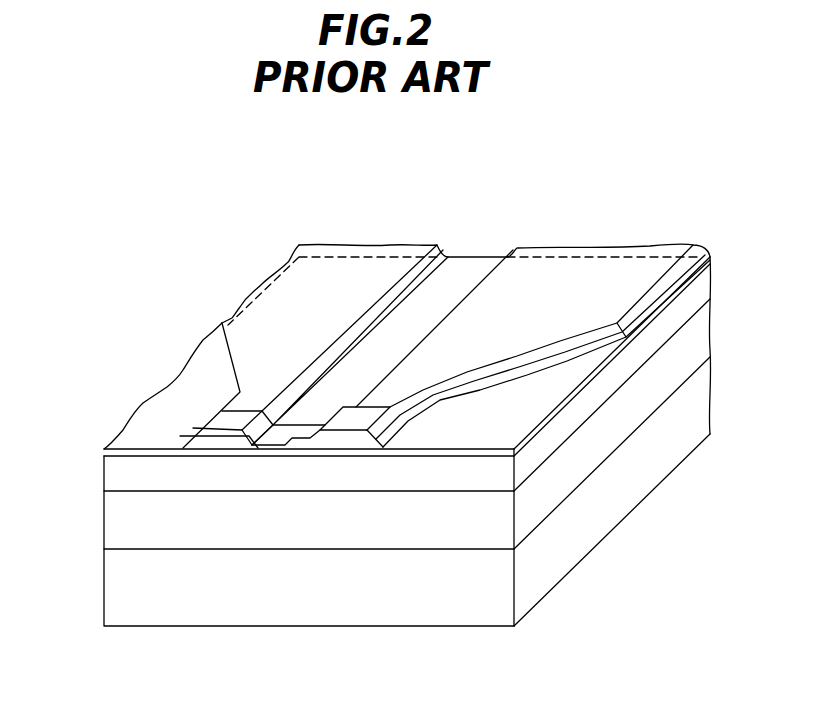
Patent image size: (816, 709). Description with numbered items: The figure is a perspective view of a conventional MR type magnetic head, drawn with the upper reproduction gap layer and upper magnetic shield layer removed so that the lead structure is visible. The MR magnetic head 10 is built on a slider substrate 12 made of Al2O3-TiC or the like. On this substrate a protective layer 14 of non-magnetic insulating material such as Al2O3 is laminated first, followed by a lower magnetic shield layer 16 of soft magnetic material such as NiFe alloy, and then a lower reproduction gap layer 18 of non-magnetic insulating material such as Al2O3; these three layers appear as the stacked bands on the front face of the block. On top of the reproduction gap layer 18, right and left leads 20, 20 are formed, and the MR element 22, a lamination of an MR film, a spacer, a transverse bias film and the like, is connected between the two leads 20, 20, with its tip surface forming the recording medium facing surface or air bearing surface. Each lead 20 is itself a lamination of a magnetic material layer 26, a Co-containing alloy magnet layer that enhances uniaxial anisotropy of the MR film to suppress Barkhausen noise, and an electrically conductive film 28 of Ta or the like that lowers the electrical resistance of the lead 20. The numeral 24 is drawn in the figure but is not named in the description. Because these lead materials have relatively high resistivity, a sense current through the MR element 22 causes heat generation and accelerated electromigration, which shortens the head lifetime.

The MR magnetic head 10 is at (579, 176).
The slider substrate 12 is at (127, 583).
The protective layer 14 is at (128, 517).
The lower magnetic shield layer 16 is at (123, 472).
The lower reproduction gap layer 18 is at (441, 452).
The lead 20 is at (550, 288).
The MR element 22 is at (287, 449).
The optical waveguide layer 24 is at (216, 543).
The magnetic material layer 26 is at (405, 431).
The electrically conductive film 28 is at (425, 410).